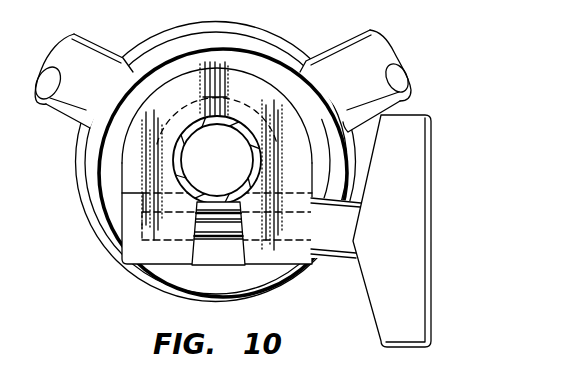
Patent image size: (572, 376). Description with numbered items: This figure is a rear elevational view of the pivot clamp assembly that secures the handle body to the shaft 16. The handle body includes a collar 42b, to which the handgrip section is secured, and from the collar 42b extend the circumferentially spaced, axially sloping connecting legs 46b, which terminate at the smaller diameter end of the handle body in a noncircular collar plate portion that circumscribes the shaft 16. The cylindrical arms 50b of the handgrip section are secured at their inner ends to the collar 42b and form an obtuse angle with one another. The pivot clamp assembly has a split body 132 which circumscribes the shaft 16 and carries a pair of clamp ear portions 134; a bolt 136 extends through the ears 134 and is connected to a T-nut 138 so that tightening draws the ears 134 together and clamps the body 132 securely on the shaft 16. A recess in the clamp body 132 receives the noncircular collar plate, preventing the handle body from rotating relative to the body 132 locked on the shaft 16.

The shaft 16 is at (246, 142).
The collar 42b is at (76, 170).
The connecting legs 46b is at (172, 42).
The cylindrical arms 50b is at (105, 45).
The split body 132 is at (238, 88).
The clamp ear portions 134 is at (150, 266).
The bolt 136 is at (220, 237).
The T-nut 138 is at (371, 307).